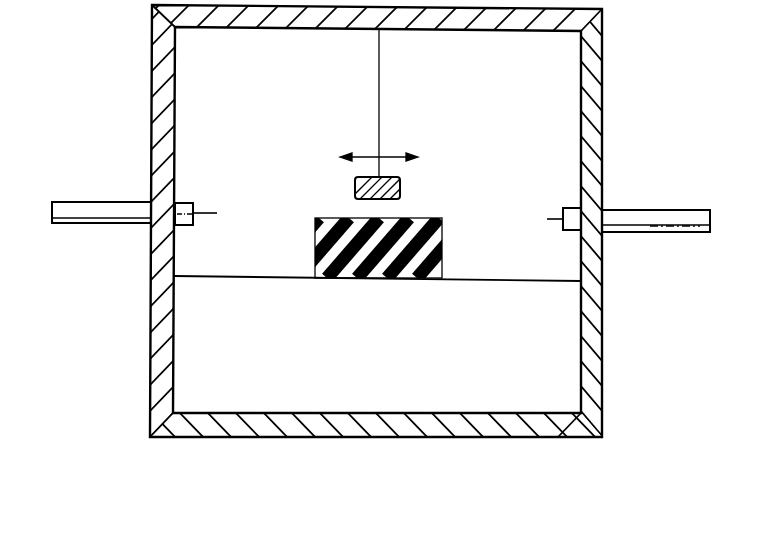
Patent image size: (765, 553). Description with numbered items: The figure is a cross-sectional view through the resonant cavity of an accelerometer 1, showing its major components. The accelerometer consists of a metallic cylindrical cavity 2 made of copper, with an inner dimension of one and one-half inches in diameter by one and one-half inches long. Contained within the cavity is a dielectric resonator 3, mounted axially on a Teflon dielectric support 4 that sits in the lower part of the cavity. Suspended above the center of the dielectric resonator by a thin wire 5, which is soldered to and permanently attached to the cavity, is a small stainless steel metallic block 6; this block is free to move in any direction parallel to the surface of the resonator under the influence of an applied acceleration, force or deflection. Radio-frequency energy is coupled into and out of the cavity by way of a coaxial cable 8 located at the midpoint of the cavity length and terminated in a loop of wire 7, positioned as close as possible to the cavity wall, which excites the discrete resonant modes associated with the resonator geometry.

The accelerometer 1 is at (43, 22).
The metallic cylindrical cavity 2 is at (238, 28).
The dielectric resonator 3 is at (326, 250).
The Teflon dielectric support 4 is at (391, 352).
The thin wire 5 is at (380, 62).
The metallic block 6 is at (401, 190).
The loop of wire 7 is at (553, 218).
The coaxial cable 8 is at (656, 216).